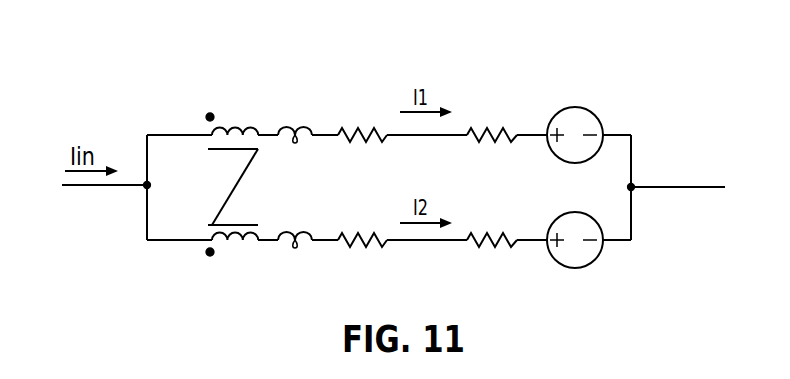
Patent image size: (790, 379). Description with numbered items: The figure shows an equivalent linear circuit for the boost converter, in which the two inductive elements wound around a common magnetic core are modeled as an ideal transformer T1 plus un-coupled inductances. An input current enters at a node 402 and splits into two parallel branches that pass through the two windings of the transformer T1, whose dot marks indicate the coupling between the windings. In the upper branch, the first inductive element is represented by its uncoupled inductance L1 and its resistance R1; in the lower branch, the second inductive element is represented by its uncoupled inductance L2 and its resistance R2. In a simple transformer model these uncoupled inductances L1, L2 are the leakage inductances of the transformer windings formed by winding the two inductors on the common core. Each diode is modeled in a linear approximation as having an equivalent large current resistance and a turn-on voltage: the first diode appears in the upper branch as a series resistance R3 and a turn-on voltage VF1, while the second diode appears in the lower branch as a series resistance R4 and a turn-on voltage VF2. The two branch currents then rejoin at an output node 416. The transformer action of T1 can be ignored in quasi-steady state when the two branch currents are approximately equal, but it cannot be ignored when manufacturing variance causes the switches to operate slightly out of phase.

The input node 402 is at (146, 187).
The output node 416 is at (692, 185).
The ideal transformer T1 is at (227, 195).
The uncoupled inductance L1 is at (295, 120).
The uncoupled inductance L2 is at (295, 255).
The resistance R1 is at (362, 120).
The resistance R2 is at (362, 226).
The series resistance R3 is at (492, 122).
The series resistance R4 is at (492, 227).
The turn-on voltage VF1 is at (575, 155).
The turn-on voltage VF2 is at (575, 262).